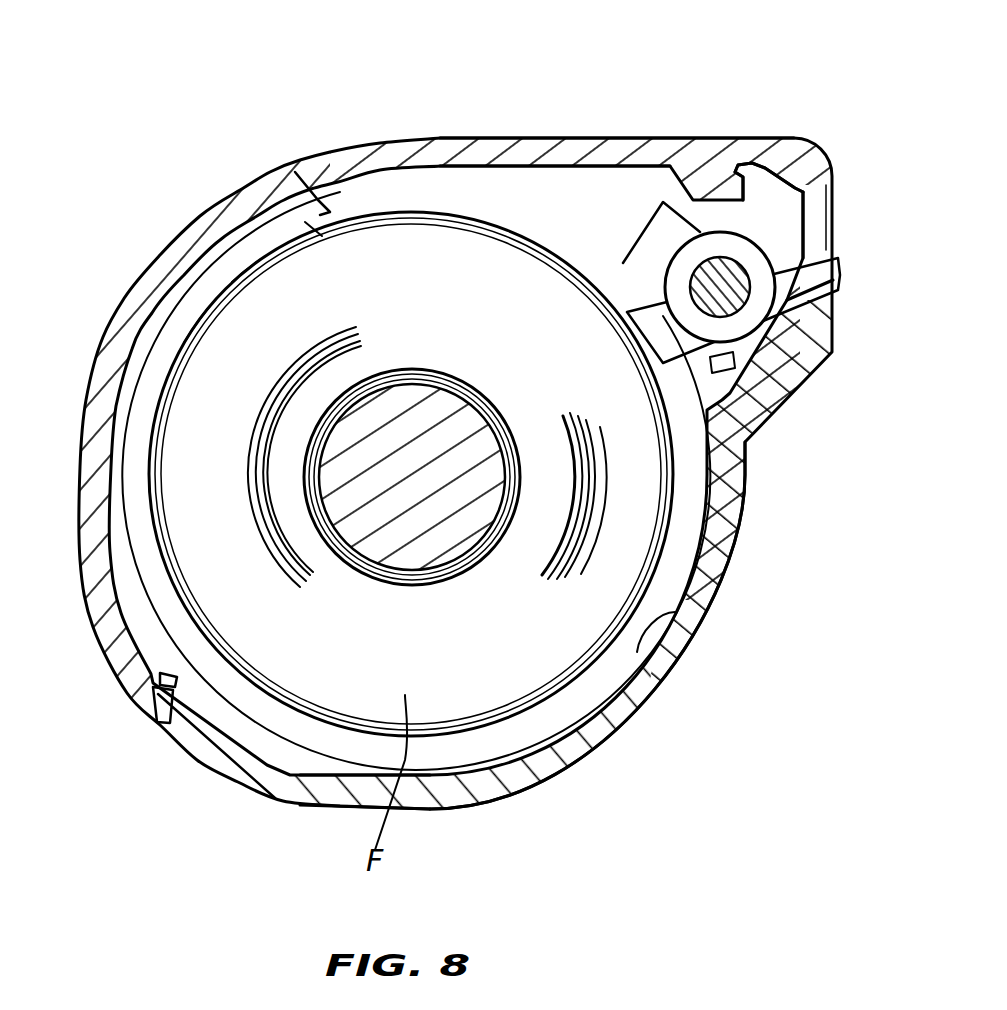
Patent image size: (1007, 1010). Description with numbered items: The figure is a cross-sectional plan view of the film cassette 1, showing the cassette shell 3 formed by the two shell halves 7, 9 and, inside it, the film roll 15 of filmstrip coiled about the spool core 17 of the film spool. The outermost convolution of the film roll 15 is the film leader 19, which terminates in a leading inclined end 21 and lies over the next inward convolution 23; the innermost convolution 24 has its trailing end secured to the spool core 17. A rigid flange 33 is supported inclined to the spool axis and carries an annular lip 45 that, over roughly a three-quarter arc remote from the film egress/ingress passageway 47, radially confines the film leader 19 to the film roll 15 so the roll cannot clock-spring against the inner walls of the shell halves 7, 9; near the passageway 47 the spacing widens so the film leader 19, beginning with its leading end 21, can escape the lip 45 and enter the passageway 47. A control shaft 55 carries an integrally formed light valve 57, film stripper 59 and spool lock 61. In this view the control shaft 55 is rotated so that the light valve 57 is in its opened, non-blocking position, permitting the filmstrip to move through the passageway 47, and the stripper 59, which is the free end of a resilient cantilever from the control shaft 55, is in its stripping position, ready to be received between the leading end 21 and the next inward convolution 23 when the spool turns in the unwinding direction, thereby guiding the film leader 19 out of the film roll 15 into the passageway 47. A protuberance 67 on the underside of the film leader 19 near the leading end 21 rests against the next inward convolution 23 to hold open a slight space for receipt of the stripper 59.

The film cassette 1 is at (228, 181).
The cassette shell 3 is at (98, 342).
The shell half 7 is at (402, 138).
The shell half 9 is at (545, 784).
The film roll 15 is at (575, 640).
The spool core 17 is at (432, 380).
The film leader 19 is at (230, 277).
The leading end 21 is at (323, 217).
The next inward convolution 23 is at (200, 320).
The innermost convolution 24 is at (350, 547).
The flange 33 is at (705, 553).
The annular lip 45 is at (703, 620).
The film egress/ingress passageway 47 is at (787, 222).
The control shaft 55 is at (690, 272).
The light valve 57 is at (833, 245).
The film stripper 59 is at (655, 325).
The spool lock 61 is at (657, 227).
The protuberance 67 is at (313, 228).